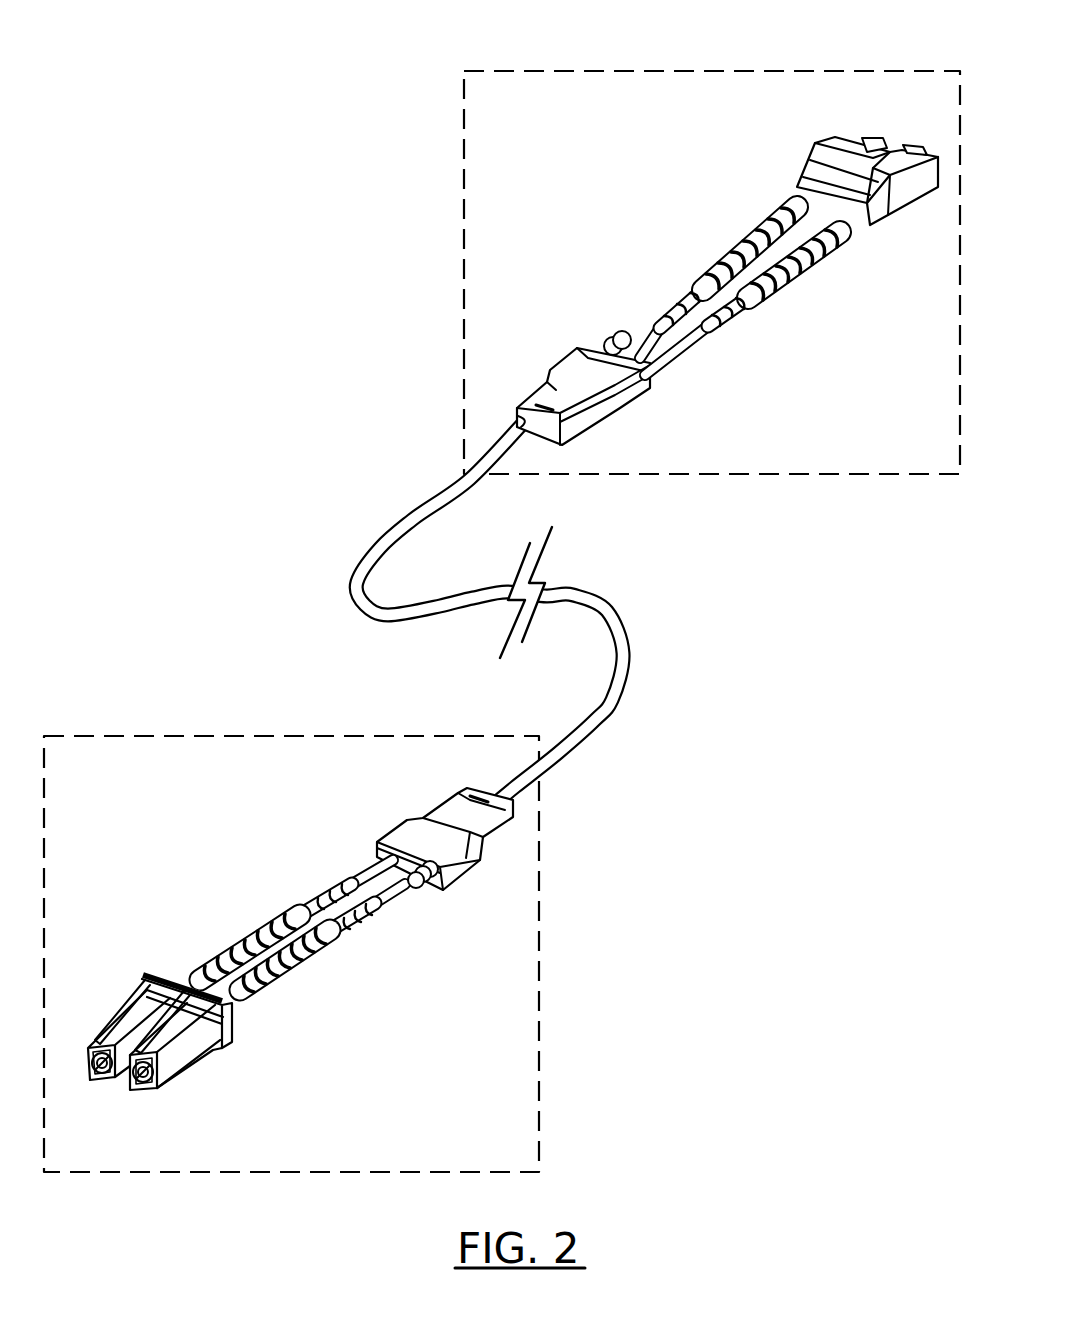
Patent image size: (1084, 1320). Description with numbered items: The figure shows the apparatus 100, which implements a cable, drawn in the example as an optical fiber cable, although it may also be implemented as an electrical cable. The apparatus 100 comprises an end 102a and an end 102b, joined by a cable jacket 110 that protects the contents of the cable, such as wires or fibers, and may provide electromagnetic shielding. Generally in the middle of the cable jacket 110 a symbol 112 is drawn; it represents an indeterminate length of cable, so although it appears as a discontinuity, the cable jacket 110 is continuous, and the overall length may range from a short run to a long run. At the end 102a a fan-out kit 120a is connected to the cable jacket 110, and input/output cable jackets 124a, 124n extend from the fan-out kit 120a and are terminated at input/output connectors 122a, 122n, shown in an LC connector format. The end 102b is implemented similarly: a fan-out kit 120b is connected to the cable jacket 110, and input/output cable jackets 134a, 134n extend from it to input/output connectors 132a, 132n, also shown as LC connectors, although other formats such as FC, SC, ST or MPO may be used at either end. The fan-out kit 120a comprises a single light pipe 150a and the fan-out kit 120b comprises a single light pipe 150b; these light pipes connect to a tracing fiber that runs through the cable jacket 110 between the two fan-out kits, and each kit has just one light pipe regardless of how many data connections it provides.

The apparatus 100 is at (212, 56).
The end 102a is at (148, 734).
The end 102b is at (562, 70).
The cable jacket 110 is at (433, 492).
The symbol 112 is at (528, 562).
The fan-out kit 120a is at (404, 822).
The fan-out kit 120b is at (540, 388).
The input/output connector 122a is at (108, 1080).
The input/output connector 122n is at (150, 1096).
The input/output cable jacket 124a is at (290, 910).
The input/output cable jacket 124n is at (343, 936).
The input/output connector 132a is at (924, 143).
The input/output connector 132n is at (872, 138).
The input/output cable jacket 134a is at (780, 290).
The input/output cable jacket 134n is at (740, 240).
The light pipe 150a is at (414, 889).
The light pipe 150b is at (612, 340).